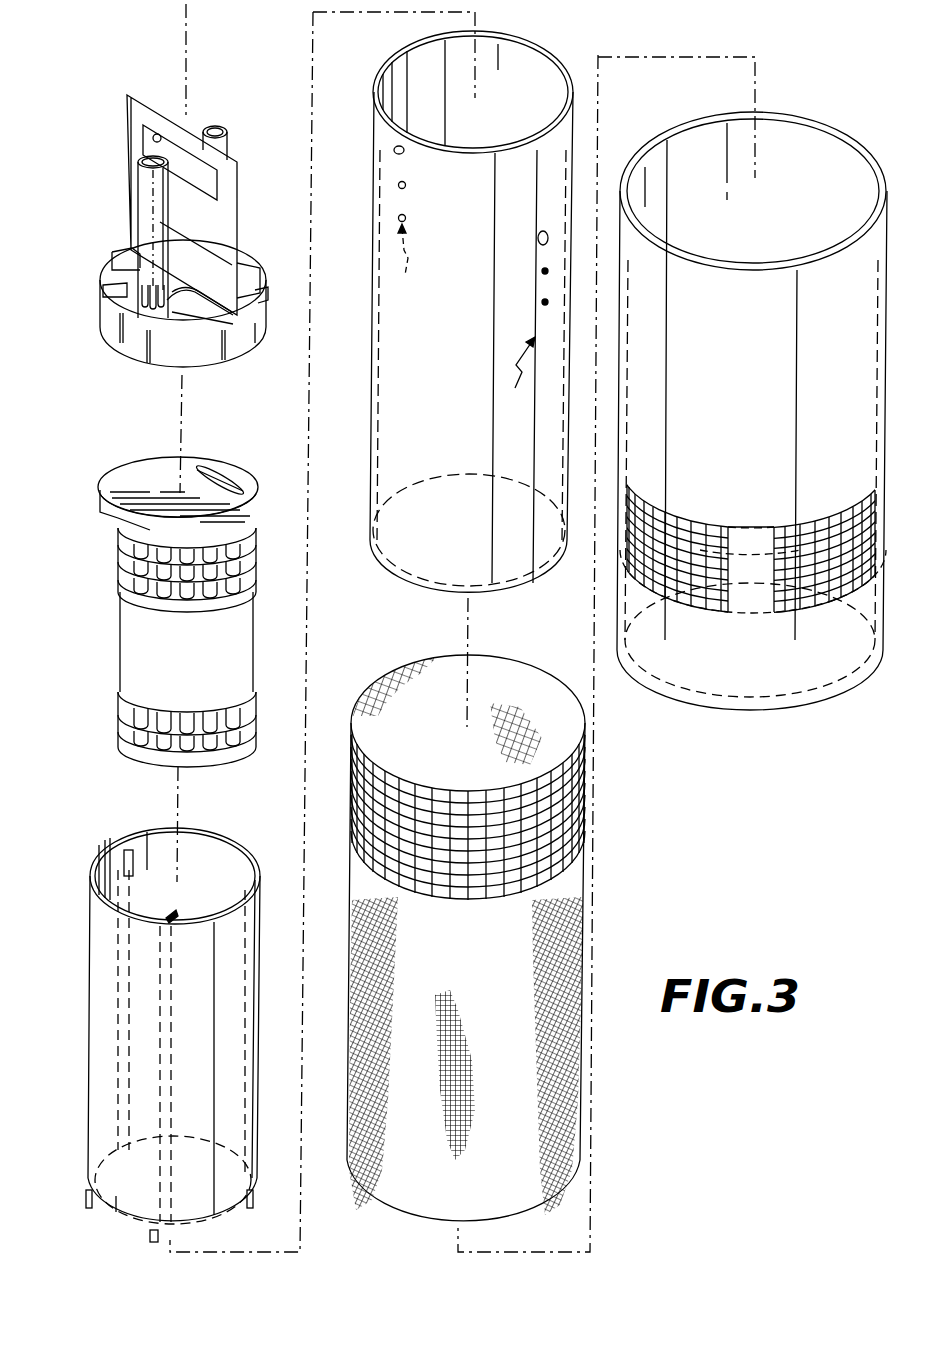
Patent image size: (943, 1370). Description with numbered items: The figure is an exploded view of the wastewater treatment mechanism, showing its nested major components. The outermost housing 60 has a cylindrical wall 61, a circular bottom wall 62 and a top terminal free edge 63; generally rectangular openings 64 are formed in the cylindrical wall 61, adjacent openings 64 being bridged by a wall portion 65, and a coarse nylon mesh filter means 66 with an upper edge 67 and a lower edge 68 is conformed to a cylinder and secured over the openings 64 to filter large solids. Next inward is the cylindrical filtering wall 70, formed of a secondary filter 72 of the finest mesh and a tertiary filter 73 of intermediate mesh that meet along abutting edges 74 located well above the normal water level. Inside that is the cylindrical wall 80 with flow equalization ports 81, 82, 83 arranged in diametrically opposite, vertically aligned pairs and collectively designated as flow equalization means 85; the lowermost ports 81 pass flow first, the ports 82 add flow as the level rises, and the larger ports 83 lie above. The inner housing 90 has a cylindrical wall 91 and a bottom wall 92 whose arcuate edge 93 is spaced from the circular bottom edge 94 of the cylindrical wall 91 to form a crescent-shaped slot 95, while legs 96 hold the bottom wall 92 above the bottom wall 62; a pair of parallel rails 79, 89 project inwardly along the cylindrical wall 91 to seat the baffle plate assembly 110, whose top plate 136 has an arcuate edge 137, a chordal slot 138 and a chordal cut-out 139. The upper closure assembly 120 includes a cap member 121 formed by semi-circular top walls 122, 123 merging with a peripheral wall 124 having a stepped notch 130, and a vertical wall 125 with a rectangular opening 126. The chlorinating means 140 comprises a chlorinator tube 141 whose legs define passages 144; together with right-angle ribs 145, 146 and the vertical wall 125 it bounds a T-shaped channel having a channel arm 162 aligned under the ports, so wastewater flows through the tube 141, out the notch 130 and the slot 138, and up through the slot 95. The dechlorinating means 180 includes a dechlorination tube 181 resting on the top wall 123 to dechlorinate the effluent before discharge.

The outermost housing 60 is at (752, 411).
The cylindrical wall 61 is at (767, 407).
The bottom wall 62 is at (765, 683).
The top terminal free edge 63 is at (707, 253).
The openings 64 is at (837, 583).
The wall portion 65 is at (760, 592).
The filter means 66 is at (693, 580).
The upper edge 67 is at (733, 527).
The lower edge 68 is at (773, 610).
The cylindrical filtering wall 70 is at (499, 938).
The secondary filter 72 is at (513, 1051).
The tertiary filter 73 is at (457, 751).
The abutting edges 74 is at (492, 900).
The rail 79 is at (128, 870).
The cylindrical wall 80 is at (445, 311).
The flow equalization ports 81 is at (410, 221).
The flow equalization ports 82 is at (410, 187).
The flow equalization ports 83 is at (407, 155).
The flow equalization means 85 is at (466, 314).
The rail 89 is at (178, 915).
The inner housing 90 is at (162, 1041).
The cylindrical wall 91 is at (214, 1024).
The bottom wall 92 is at (215, 1202).
The arcuate edge 93 is at (128, 1148).
The circular bottom edge 94 is at (118, 1200).
The crescent-shaped slot 95 is at (95, 1177).
The legs 96 is at (253, 1207).
The baffle plate assembly 110 is at (182, 593).
The upper closure assembly 120 is at (197, 229).
The cap member 121 is at (107, 262).
The semi-circular top wall 122 is at (122, 310).
The semi-circular top wall 123 is at (243, 262).
The peripheral wall 124 is at (262, 300).
The vertical wall 125 is at (210, 221).
The rectangular opening 126 is at (157, 134).
The stepped notch 130 is at (130, 340).
The top plate 136 is at (135, 470).
The arcuate edge 137 is at (167, 458).
The chordal slot 138 is at (118, 530).
The chordal cut-out 139 is at (228, 468).
The chlorinating means 140 is at (138, 178).
The dry tablet chlorinator tube 141 is at (140, 218).
The passages 144 is at (152, 310).
The right-angle rib 145 is at (118, 293).
The right-angle rib 146 is at (185, 312).
The channel arm 162 is at (223, 318).
The dechlorinating means 180 is at (216, 118).
The dechlorination tube 181 is at (227, 133).